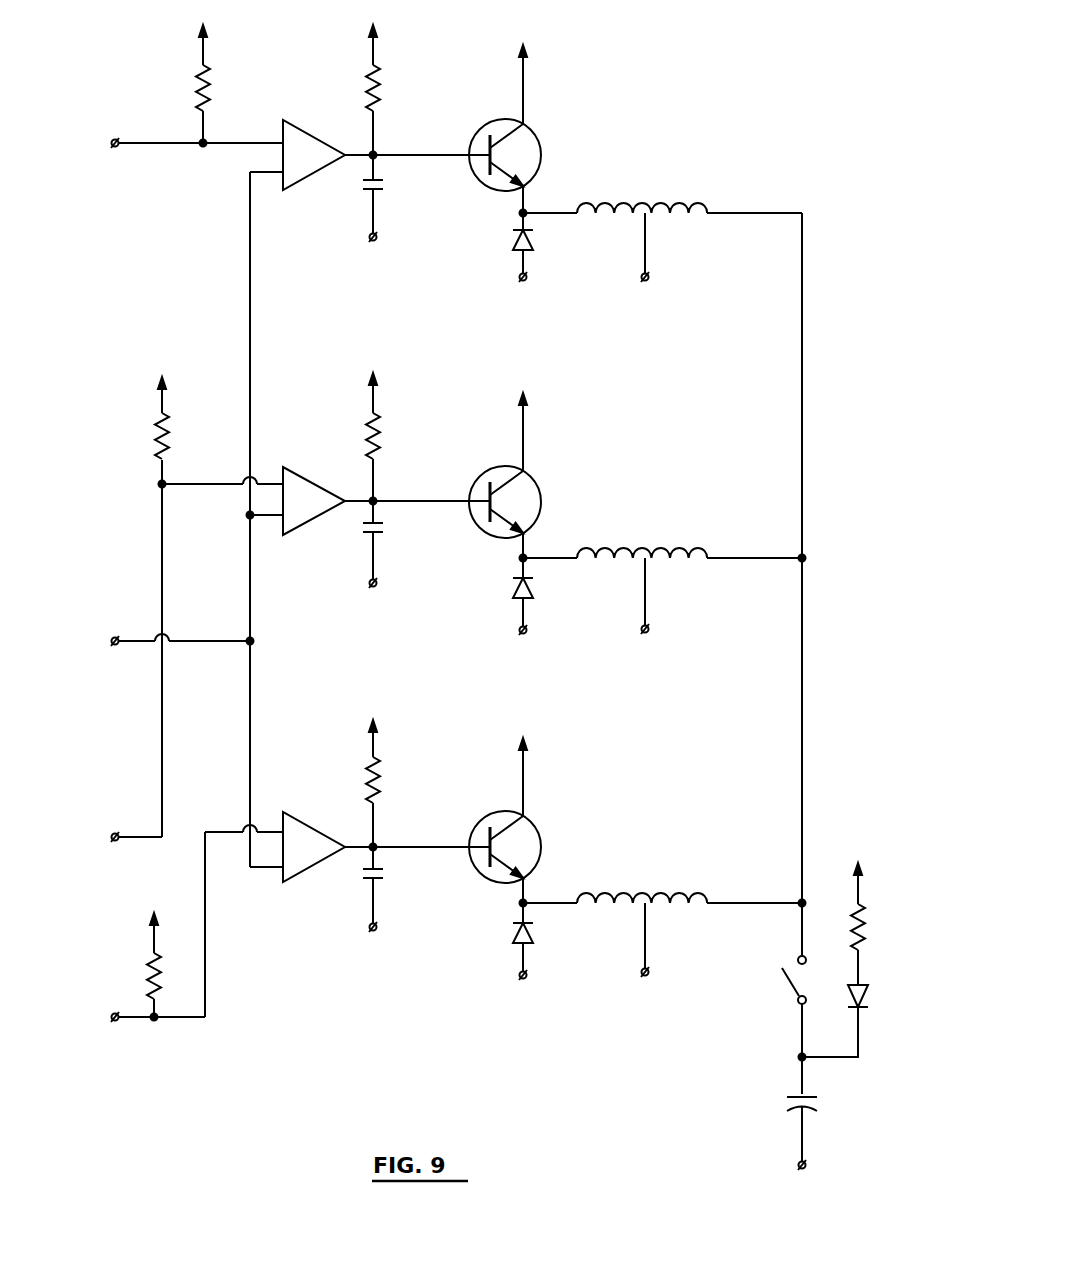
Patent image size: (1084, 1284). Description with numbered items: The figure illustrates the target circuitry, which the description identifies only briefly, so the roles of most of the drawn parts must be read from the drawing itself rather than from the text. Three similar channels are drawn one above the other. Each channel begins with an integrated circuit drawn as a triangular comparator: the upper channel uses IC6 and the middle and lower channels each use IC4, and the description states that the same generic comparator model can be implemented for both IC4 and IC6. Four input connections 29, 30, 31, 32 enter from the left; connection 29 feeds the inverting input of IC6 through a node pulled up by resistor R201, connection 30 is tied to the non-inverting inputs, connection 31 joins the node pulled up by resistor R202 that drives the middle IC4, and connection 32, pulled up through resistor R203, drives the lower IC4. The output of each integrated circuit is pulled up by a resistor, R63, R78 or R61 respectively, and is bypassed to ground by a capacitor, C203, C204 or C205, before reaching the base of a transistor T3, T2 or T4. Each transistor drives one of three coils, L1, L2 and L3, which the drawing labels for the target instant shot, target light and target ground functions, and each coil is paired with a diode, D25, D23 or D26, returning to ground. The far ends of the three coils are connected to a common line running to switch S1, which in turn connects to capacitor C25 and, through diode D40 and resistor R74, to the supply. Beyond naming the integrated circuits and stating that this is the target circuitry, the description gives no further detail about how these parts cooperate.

The input terminal 29 is at (180, 142).
The input terminal 30 is at (166, 639).
The input terminal 31 is at (120, 839).
The input terminal 32 is at (141, 1017).
The resistor R201 10K R201 is at (243, 71).
The resistor R202 10K R202 is at (125, 419).
The resistor R203 10K R203 is at (117, 950).
The resistor R63 100K R63 is at (420, 79).
The resistor R78 100K R78 is at (420, 426).
The resistor R61 100K R61 is at (420, 772).
The resistor R74 10K R74 is at (890, 911).
The integrated circuit IC6 is at (370, 158).
The integrated circuit IC4 is at (326, 674).
The capacitor C203 0.1uF C203 is at (336, 212).
The capacitor C204 0.1uF C204 is at (335, 559).
The capacitor C205 .01uF C205 is at (338, 904).
The capacitor C25 100uF/25V C25 is at (737, 1138).
The transistor T3 MPS14A T3 is at (558, 116).
The transistor T2 MPS14A T2 is at (558, 463).
The transistor T4 MPS14A T4 is at (558, 808).
The diode D25 is at (555, 262).
The diode D23 is at (555, 609).
The diode D26 is at (553, 955).
The diode D40 is at (883, 1008).
The switch S1 is at (805, 1025).
The solenoid TARG INST/SHT L1 is at (661, 227).
The solenoid TARG LT L2 is at (663, 578).
The solenoid TARG GND L3 is at (663, 924).